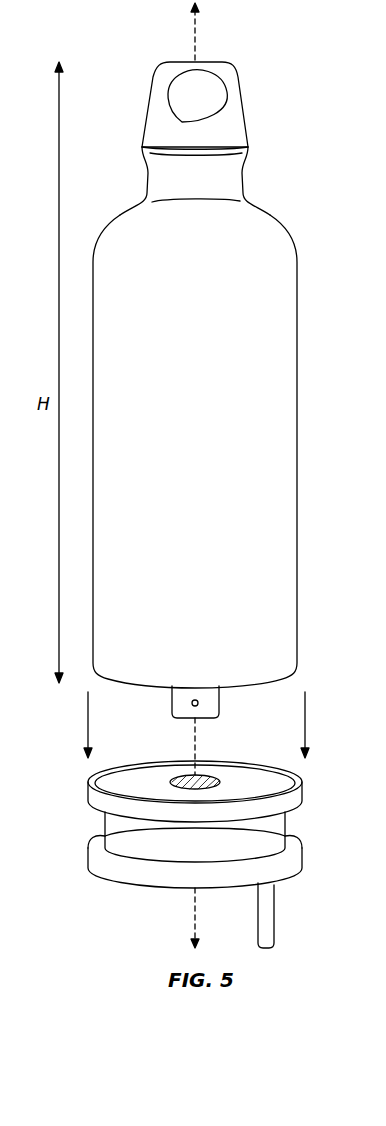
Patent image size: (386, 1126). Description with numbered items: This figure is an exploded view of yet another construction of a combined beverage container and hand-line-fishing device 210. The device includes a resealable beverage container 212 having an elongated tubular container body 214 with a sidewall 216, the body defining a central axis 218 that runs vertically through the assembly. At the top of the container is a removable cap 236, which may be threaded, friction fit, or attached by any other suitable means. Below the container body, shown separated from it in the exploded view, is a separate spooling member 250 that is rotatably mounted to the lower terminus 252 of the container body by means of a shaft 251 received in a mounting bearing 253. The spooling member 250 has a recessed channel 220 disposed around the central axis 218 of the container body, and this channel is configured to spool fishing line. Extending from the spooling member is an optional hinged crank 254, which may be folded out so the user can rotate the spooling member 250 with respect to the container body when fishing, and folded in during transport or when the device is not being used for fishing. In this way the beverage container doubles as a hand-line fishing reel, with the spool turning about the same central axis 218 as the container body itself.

The beverage container and hand-line-fishing device 210 is at (238, 396).
The resealable beverage container 212 is at (268, 210).
The container body 214 is at (300, 348).
The sidewall 216 is at (297, 478).
The central axis 218 is at (197, 43).
The recessed channel 220 is at (287, 828).
The removable cap 236 is at (243, 103).
The spooling member 250 is at (219, 842).
The shaft 251 is at (220, 702).
The lower terminus 252 is at (93, 665).
The mounting bearing 253 is at (218, 773).
The hinged crank 254 is at (274, 912).